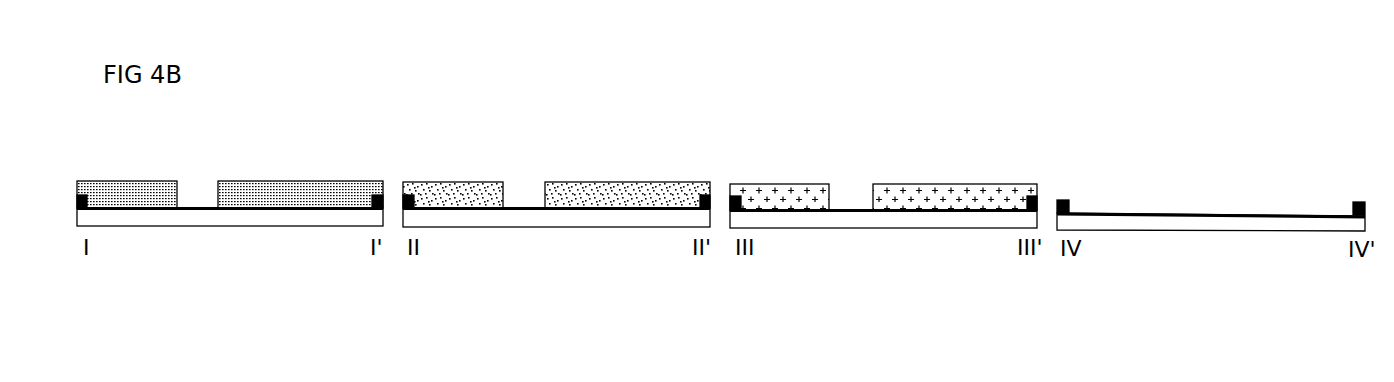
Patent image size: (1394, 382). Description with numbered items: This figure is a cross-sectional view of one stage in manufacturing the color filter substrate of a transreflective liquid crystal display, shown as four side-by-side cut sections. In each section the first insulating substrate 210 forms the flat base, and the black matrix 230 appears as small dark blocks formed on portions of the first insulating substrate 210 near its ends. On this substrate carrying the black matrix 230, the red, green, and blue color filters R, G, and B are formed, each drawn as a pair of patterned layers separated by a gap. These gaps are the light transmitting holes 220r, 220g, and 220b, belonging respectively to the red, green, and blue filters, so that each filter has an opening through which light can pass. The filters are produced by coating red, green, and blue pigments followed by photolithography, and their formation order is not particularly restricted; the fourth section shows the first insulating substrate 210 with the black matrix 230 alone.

The light transmitting hole 220r is at (178, 193).
The light transmitting hole 220g is at (505, 195).
The light transmitting hole 220b is at (832, 197).
The first insulating substrate 210 is at (1235, 224).
The black matrix 230 is at (1358, 202).